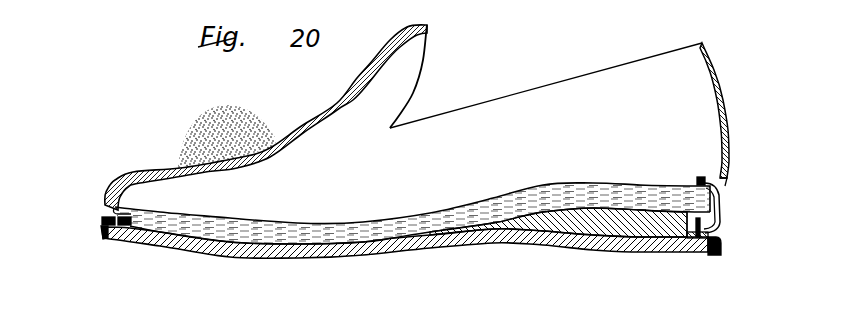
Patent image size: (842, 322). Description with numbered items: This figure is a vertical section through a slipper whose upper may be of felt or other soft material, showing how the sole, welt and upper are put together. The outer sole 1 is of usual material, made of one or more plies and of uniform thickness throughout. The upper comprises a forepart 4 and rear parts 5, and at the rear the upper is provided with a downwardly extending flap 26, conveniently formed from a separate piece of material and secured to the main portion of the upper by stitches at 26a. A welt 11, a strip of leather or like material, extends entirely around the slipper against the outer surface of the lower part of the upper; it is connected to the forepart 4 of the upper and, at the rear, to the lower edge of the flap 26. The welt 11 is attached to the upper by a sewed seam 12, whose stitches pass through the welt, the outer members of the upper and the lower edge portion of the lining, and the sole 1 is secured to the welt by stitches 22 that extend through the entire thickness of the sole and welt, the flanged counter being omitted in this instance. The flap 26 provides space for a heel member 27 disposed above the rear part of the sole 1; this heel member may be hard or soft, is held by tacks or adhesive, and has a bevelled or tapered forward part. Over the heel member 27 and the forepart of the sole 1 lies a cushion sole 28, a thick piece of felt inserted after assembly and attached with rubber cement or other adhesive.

The outer sole 1 is at (207, 243).
The forepart 4 is at (330, 94).
The rear parts 5 is at (652, 67).
The welt 11 is at (102, 216).
The sewed seam 12 is at (131, 213).
The stitches 22 is at (102, 240).
The downwardly extending flap 26 is at (722, 207).
The stitches 26a is at (697, 179).
The heel member 27 is at (625, 228).
The cushion sole 28 is at (543, 195).